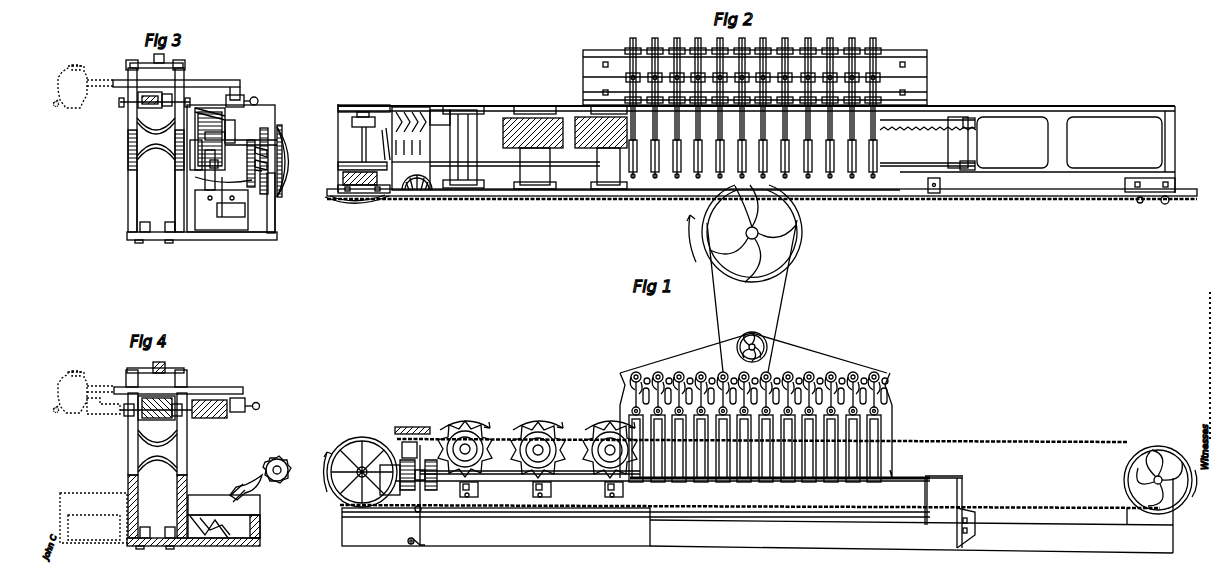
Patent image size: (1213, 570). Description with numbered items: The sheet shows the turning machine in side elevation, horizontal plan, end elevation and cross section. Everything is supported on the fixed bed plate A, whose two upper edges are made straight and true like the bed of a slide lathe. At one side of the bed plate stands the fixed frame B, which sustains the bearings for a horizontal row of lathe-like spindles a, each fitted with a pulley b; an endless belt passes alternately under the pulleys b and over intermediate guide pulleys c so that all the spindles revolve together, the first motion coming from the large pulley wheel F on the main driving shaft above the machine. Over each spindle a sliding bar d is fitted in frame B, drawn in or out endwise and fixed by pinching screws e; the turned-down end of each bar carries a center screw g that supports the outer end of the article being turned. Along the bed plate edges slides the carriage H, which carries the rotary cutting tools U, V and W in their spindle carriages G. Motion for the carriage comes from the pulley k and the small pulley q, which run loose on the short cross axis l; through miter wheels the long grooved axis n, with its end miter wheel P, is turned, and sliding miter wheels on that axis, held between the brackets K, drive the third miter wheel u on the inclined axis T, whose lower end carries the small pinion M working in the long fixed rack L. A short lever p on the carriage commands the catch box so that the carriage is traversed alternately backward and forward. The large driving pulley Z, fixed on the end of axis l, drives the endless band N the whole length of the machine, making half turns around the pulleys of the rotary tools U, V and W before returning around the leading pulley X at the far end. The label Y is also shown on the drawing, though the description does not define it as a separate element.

In FIG. 3, the fixed bed plate A is at (201, 231).
In FIG. 4, the fixed bed plate A is at (198, 512).
In FIG. 2, the fixed bed plate A is at (759, 119).
In FIG. 1, the fixed bed plate A is at (757, 515).
In FIG. 3, the fixed frame B is at (153, 150).
In FIG. 4, the fixed frame B is at (155, 465).
In FIG. 2, the fixed frame B is at (755, 74).
In FIG. 1, the fixed frame B is at (662, 501).
In FIG. 3, the guide pulleys c is at (155, 57).
In FIG. 4, the guide pulleys c is at (155, 363).
In FIG. 1, the guide pulleys c is at (753, 296).
In FIG. 3, the sliding bar d is at (176, 85).
In FIG. 4, the sliding bar d is at (178, 386).
In FIG. 4, the pinching screws e is at (154, 378).
In FIG. 3, the center screw g is at (247, 101).
In FIG. 4, the center screw g is at (249, 405).
In FIG. 2, the center screw g is at (753, 113).
In FIG. 3, the spindles a is at (154, 100).
In FIG. 4, the spindles a is at (156, 408).
In FIG. 3, the pulley b is at (167, 100).
In FIG. 1, the pulley b is at (756, 427).
In FIG. 4, the pulley k is at (209, 405).
In FIG. 4, the third miter wheel u is at (260, 478).
In FIG. 4, the inclined axis T is at (237, 493).
In FIG. 1, the inclined axis T is at (412, 426).
In FIG. 4, the carriage H is at (224, 505).
In FIG. 1, the carriage H is at (636, 513).
In FIG. 3, the small pinion M is at (221, 203).
In FIG. 4, the small pinion M is at (224, 526).
In FIG. 3, the rotary cutting tool U is at (231, 168).
In FIG. 2, the rotary cutting tool U is at (515, 142).
In FIG. 1, the rotary cutting tool U is at (465, 449).
In FIG. 3, the rotary cutting tool V is at (210, 109).
In FIG. 2, the rotary cutting tool V is at (533, 147).
In FIG. 1, the rotary cutting tool V is at (538, 449).
In FIG. 2, the rotary cutting tool W is at (583, 157).
In FIG. 1, the rotary cutting tool W is at (610, 449).
In FIG. 3, the small pulley q is at (207, 161).
In FIG. 3, the brackets K is at (251, 163).
In FIG. 3, the endless band N is at (271, 174).
In FIG. 2, the endless band N is at (762, 204).
In FIG. 1, the endless band N is at (750, 470).
In FIG. 3, the large driving pulley Z is at (286, 161).
In FIG. 2, the large driving pulley Z is at (357, 203).
In FIG. 1, the large driving pulley Z is at (362, 468).
In FIG. 2, the leading pulley X is at (1150, 203).
In FIG. 1, the leading pulley X is at (1160, 476).
In FIG. 2, the large pulley wheel F is at (364, 149).
In FIG. 2, the short horizontal axis l is at (412, 148).
In FIG. 2, the long horizontal rack L is at (928, 155).
In FIG. 2, the long horizontal axis n is at (665, 188).
In FIG. 1, the long horizontal axis n is at (691, 474).
In FIG. 1, the drive wheel Y is at (744, 233).
In FIG. 1, the short lever p is at (771, 347).
In FIG. 1, the miter wheel P is at (418, 493).
In FIG. 1, the spindle carriages G is at (537, 490).